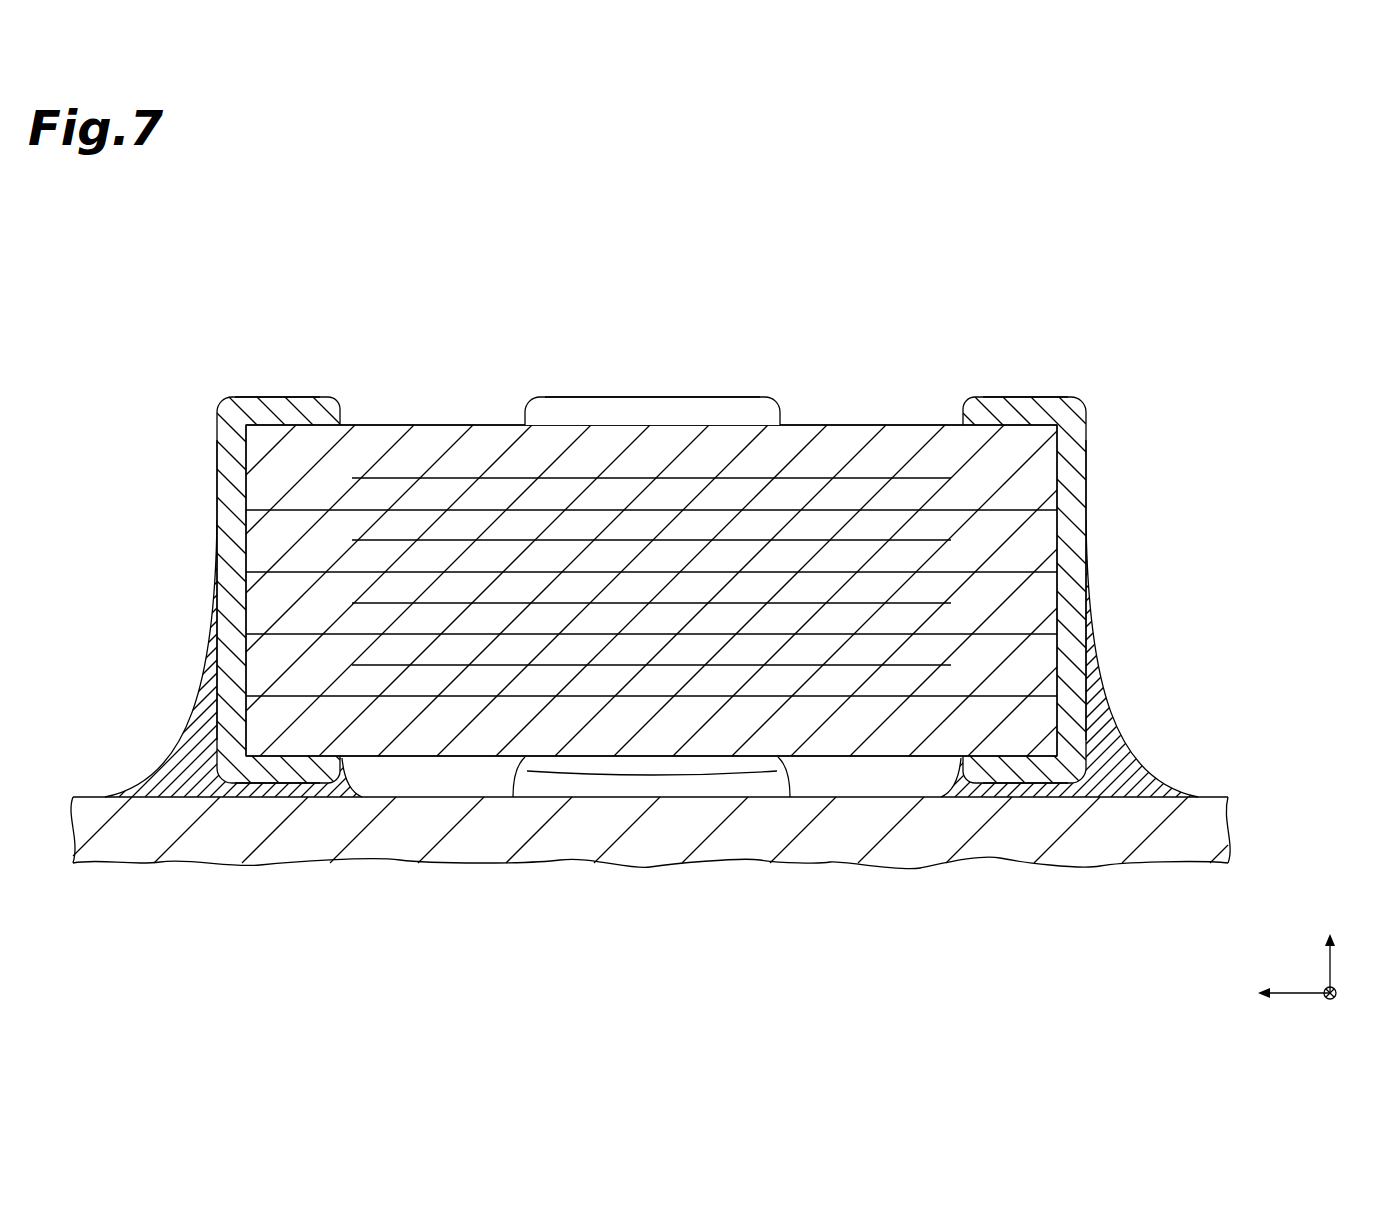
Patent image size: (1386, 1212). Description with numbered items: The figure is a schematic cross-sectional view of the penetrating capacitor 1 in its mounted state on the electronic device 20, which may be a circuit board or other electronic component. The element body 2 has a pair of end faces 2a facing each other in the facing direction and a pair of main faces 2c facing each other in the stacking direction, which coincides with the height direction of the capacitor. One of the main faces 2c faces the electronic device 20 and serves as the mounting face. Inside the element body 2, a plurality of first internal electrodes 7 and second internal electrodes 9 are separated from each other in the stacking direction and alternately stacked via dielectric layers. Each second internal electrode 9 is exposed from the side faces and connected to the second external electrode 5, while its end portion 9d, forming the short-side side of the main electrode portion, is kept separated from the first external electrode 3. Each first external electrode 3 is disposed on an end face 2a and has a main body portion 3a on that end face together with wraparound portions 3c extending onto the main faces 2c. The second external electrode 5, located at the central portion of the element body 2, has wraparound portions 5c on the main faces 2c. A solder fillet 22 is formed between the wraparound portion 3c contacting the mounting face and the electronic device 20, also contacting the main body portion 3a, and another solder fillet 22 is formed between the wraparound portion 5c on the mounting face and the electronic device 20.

The penetrating capacitor 1 is at (724, 274).
The element body 2 is at (868, 423).
The end face 2a is at (240, 566).
The main face 2c is at (651, 639).
The first external electrode 3 is at (212, 402).
The main body portion 3a is at (217, 470).
The wraparound portion 3c is at (292, 396).
The second external electrode 5 is at (740, 388).
The wraparound portion 5c is at (591, 396).
The first internal electrode 7 is at (436, 510).
The second internal electrode 9 is at (870, 478).
The end portion 9d is at (352, 478).
The electronic device 20 is at (123, 852).
The solder fillet 22 is at (178, 708).